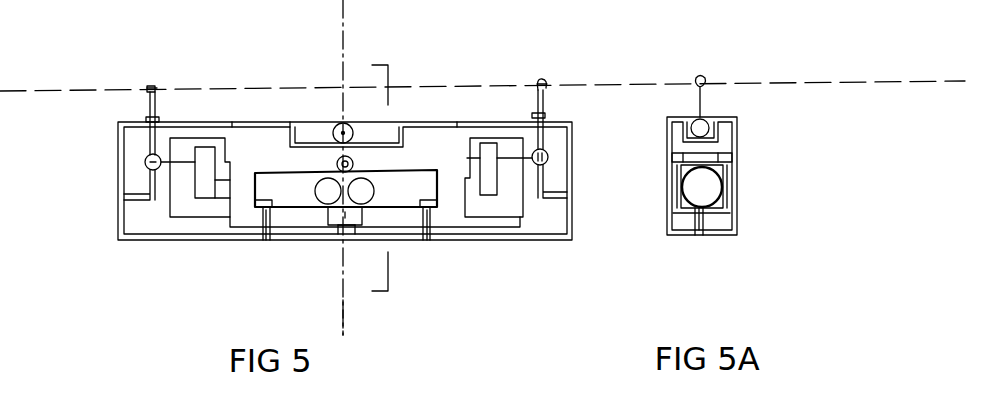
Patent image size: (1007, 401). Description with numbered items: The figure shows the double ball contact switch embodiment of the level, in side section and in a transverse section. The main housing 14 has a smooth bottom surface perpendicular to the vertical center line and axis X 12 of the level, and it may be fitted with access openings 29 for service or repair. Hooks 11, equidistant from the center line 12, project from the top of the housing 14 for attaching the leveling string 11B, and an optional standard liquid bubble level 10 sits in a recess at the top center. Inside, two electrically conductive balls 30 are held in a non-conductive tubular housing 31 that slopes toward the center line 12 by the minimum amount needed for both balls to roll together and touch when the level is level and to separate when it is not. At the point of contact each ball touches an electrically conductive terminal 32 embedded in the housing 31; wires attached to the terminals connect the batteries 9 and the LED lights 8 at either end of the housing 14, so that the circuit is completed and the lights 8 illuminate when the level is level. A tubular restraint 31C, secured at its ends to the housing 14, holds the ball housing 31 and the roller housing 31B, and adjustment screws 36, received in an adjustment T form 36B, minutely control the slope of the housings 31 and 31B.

In FIG. 5, the LED light 8 is at (144, 160).
In FIG. 5, the battery 9 is at (150, 88).
In FIG. 5A, the battery 9 is at (701, 97).
In FIG. 5, the liquid bubble level 10 is at (341, 122).
In FIG. 5, the hooks 11 is at (148, 88).
In FIG. 5, the leveling string 11B is at (290, 86).
In FIG. 5, the center line and axis X 12 is at (346, 290).
In FIG. 5, the main housing 14 is at (162, 242).
In FIG. 5A, the main housing 14 is at (667, 192).
In FIG. 5, the access 29 is at (232, 122).
In FIG. 5, the electrically conductive balls 30 is at (322, 208).
In FIG. 5A, the electrically conductive balls 30 is at (700, 186).
In FIG. 5, the housing for balls 31 is at (257, 190).
In FIG. 5A, the housing for balls 31 is at (732, 175).
In FIG. 5A, the housing for roller 31B is at (715, 150).
In FIG. 5, the tubular restraint 31C is at (350, 155).
In FIG. 5, the electrically conductive terminal 32 is at (332, 214).
In FIG. 5A, the electrically conductive terminal 32 is at (705, 218).
In FIG. 5, the adjustment screws 36 is at (262, 215).
In FIG. 5A, the adjustment screws 36 is at (701, 226).
In FIG. 5A, the adjustment T form 36B is at (695, 220).